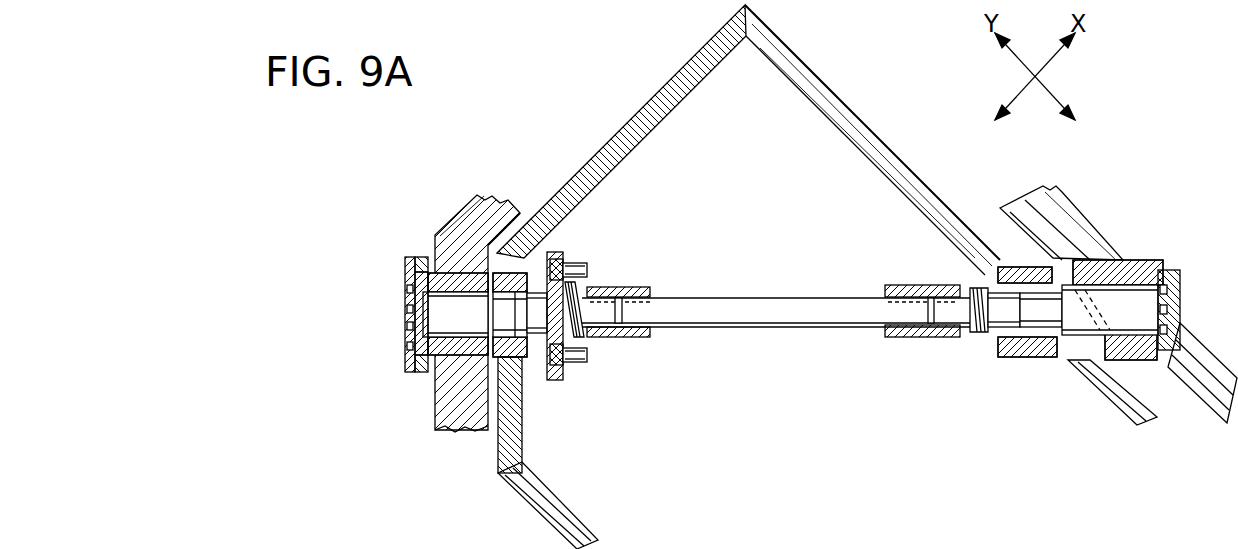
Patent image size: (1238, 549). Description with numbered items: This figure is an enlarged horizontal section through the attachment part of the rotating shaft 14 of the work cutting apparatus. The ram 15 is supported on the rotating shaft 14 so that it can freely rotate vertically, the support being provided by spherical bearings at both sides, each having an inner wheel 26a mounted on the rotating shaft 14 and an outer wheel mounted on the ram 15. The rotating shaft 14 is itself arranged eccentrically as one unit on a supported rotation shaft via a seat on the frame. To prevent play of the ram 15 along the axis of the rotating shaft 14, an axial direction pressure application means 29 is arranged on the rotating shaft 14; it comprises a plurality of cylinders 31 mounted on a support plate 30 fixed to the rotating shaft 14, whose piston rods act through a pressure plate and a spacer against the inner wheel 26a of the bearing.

The rotating shaft 14 is at (733, 302).
The ram 15 is at (612, 142).
The inner wheel 26a is at (550, 256).
The axial direction pressure application means 29 is at (688, 343).
The support plate 30 is at (567, 378).
The cylinder 31 is at (587, 268).